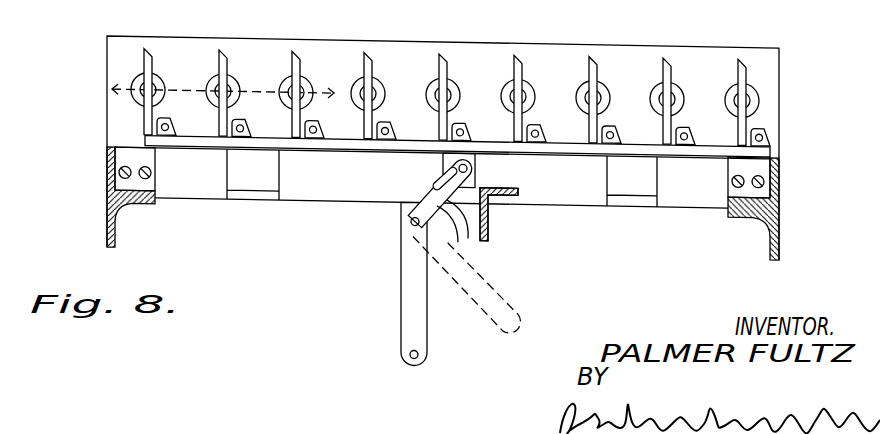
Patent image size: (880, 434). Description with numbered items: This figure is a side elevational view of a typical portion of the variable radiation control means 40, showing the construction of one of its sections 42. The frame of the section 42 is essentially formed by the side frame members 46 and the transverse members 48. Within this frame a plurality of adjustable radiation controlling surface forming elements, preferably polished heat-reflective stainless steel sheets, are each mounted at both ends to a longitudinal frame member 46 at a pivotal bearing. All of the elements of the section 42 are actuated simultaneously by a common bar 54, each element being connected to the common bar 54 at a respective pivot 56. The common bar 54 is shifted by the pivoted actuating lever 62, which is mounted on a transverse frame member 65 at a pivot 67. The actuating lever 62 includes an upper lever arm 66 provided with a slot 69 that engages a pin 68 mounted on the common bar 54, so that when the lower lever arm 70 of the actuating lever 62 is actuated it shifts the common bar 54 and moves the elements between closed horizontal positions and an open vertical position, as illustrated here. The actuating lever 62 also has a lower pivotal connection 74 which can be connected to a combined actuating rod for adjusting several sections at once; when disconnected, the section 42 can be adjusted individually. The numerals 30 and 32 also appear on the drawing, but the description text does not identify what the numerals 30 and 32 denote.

The contact blade 30 is at (223, 64).
The pivot axis 32 is at (223, 49).
The variable radiation control means 40 is at (617, 35).
The section 42 is at (765, 58).
The side frame member 46 is at (445, 59).
The transverse member 48 is at (110, 181).
The common bar 54 is at (315, 140).
The pivot 56 is at (385, 131).
The actuating lever 62 is at (473, 294).
The transverse frame member 65 is at (505, 218).
The upper lever arm 66 is at (468, 231).
The pivot 67 is at (405, 220).
The pin 68 is at (478, 155).
The slot 69 is at (480, 213).
The lower lever arm 70 is at (427, 324).
The lower pivotal connection 74 is at (413, 357).